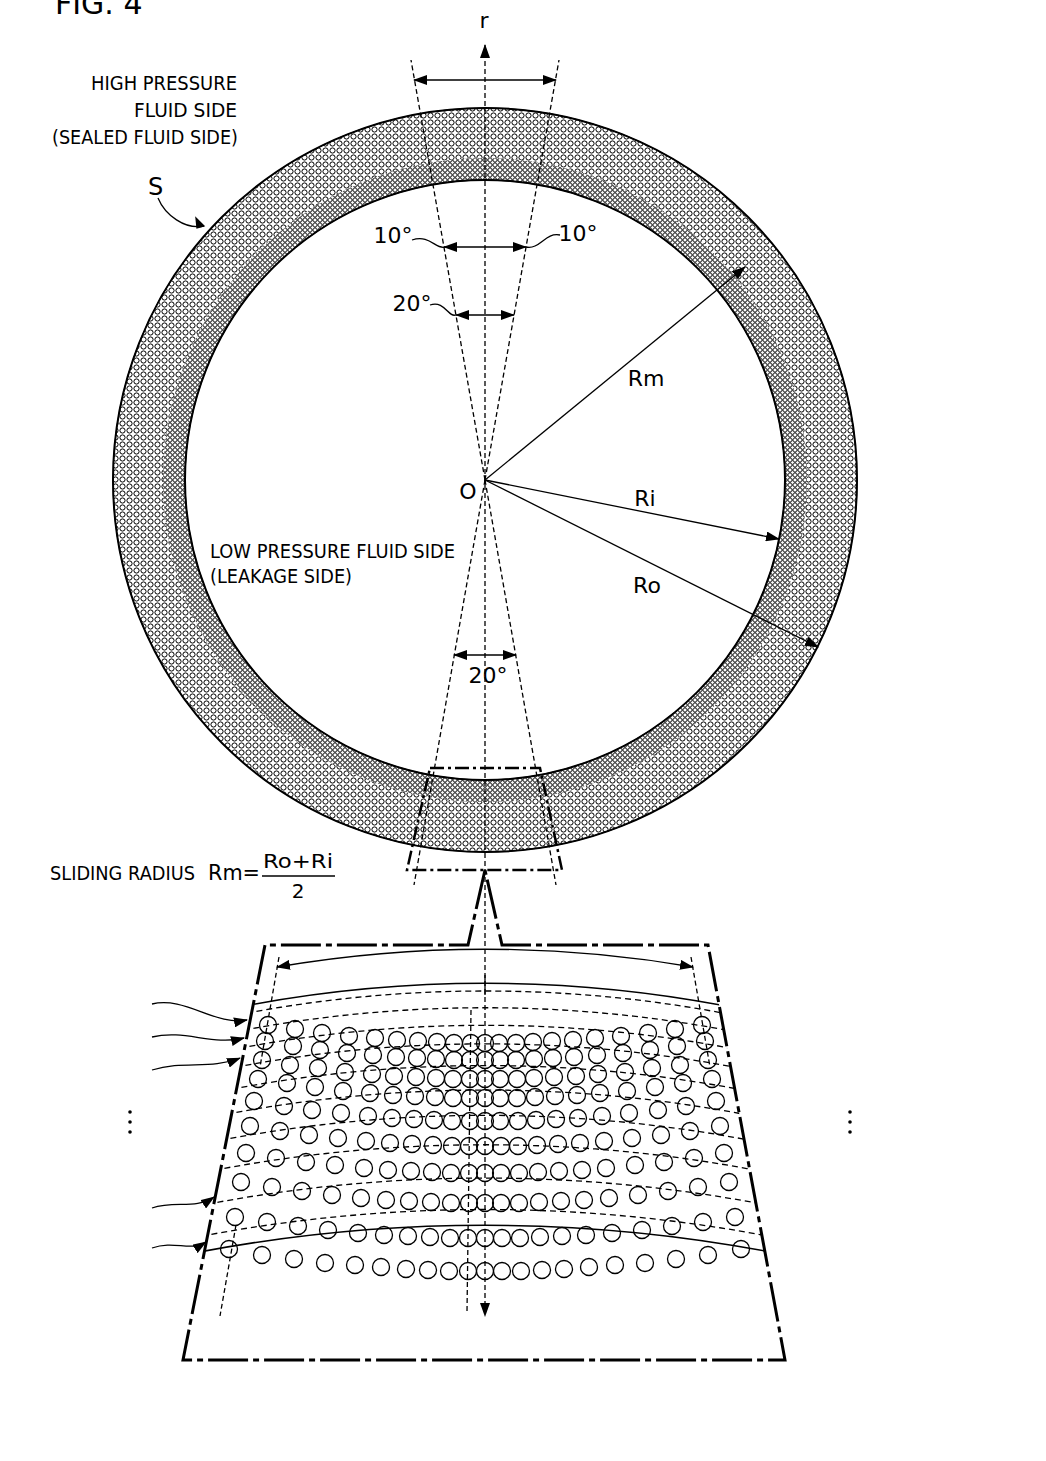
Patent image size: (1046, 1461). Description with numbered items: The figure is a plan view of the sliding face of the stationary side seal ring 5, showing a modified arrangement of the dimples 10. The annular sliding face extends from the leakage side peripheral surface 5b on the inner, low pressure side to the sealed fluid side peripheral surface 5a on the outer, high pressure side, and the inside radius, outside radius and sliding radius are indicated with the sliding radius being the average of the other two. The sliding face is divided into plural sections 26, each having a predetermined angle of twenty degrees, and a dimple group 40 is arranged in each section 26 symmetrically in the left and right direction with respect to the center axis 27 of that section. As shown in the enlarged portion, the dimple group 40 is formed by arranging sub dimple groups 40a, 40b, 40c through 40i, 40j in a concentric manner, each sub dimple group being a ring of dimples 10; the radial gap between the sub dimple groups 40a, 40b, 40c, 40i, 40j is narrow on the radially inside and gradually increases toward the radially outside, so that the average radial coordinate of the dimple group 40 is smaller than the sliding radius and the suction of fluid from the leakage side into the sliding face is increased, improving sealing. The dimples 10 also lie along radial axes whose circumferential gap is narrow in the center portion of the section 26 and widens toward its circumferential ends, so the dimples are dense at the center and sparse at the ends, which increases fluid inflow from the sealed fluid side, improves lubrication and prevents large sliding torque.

The stationary side seal ring 5 is at (752, 133).
The sealed fluid side peripheral surface 5a is at (626, 137).
The leakage side peripheral surface 5b is at (623, 212).
The dimple 10 is at (746, 762).
The section 26 is at (458, 80).
The center axis 27 is at (500, 65).
The dimple group 40 is at (740, 966).
The sub dimple group 40a is at (718, 1016).
The sub dimple group 40b is at (724, 1044).
The sub dimple group 40c is at (730, 1078).
The sub dimple group 40i is at (746, 1218).
The sub dimple group 40j is at (750, 1251).